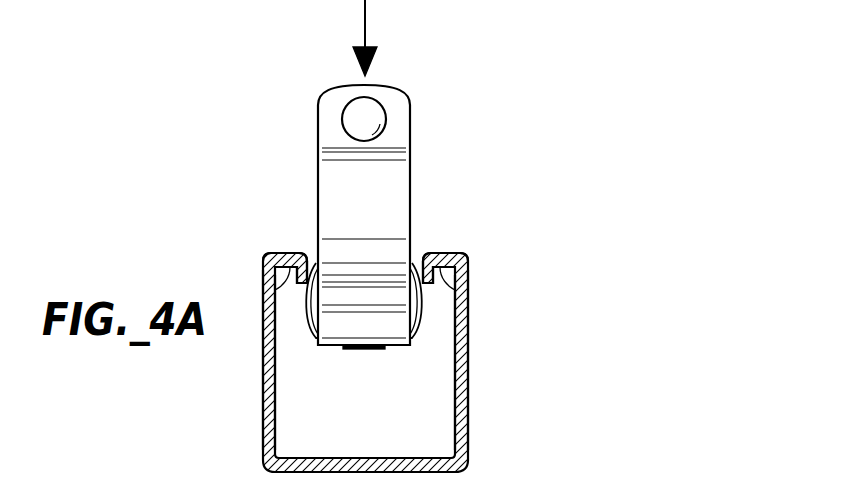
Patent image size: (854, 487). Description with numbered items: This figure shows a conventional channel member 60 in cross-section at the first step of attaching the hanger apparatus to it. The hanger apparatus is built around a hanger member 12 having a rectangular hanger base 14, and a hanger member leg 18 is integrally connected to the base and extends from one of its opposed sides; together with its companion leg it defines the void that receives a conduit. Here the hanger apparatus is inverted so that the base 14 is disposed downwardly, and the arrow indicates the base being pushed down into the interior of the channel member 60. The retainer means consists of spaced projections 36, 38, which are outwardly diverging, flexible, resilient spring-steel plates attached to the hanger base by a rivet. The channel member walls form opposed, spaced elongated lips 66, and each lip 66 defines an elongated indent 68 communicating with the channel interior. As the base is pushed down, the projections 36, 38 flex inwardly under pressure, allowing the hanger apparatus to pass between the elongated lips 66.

The hanger member 12 is at (363, 234).
The hanger base 14 is at (388, 348).
The hanger member leg 18 is at (398, 118).
The projection 36 is at (428, 312).
The projection 38 is at (305, 304).
The channel member 60 is at (373, 345).
The elongated lip 66 is at (307, 258).
The elongated indent 68 is at (263, 295).